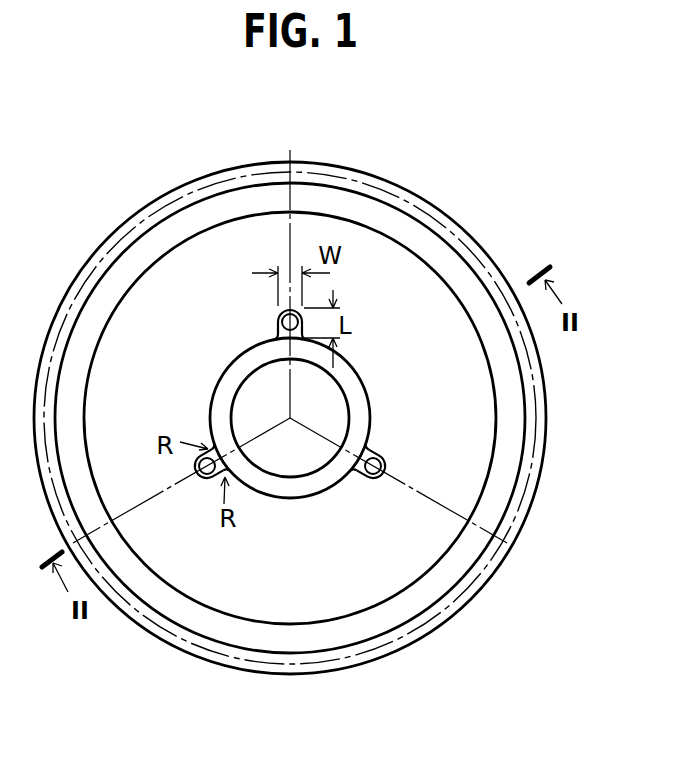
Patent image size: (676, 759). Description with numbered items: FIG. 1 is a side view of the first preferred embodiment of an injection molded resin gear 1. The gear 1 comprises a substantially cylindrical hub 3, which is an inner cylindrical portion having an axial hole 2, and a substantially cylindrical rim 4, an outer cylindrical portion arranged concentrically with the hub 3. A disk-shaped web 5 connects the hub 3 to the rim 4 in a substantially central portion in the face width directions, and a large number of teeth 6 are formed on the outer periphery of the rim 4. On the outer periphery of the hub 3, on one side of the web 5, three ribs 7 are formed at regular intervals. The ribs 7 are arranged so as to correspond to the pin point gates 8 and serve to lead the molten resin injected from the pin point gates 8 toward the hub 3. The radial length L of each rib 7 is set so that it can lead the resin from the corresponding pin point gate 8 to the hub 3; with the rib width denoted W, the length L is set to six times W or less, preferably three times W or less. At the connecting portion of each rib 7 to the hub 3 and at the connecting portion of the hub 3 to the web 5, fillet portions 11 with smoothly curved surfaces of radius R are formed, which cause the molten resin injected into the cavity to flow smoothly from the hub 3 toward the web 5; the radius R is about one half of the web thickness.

The injection molded resin gear 1 is at (442, 212).
The axial hole 2 is at (328, 376).
The hub 3 is at (303, 495).
The rim 4 is at (502, 348).
The web 5 is at (478, 418).
The teeth 6 is at (532, 503).
The ribs 7 is at (280, 327).
The pin point gates 8 is at (278, 332).
The fillet portions 11 is at (210, 447).